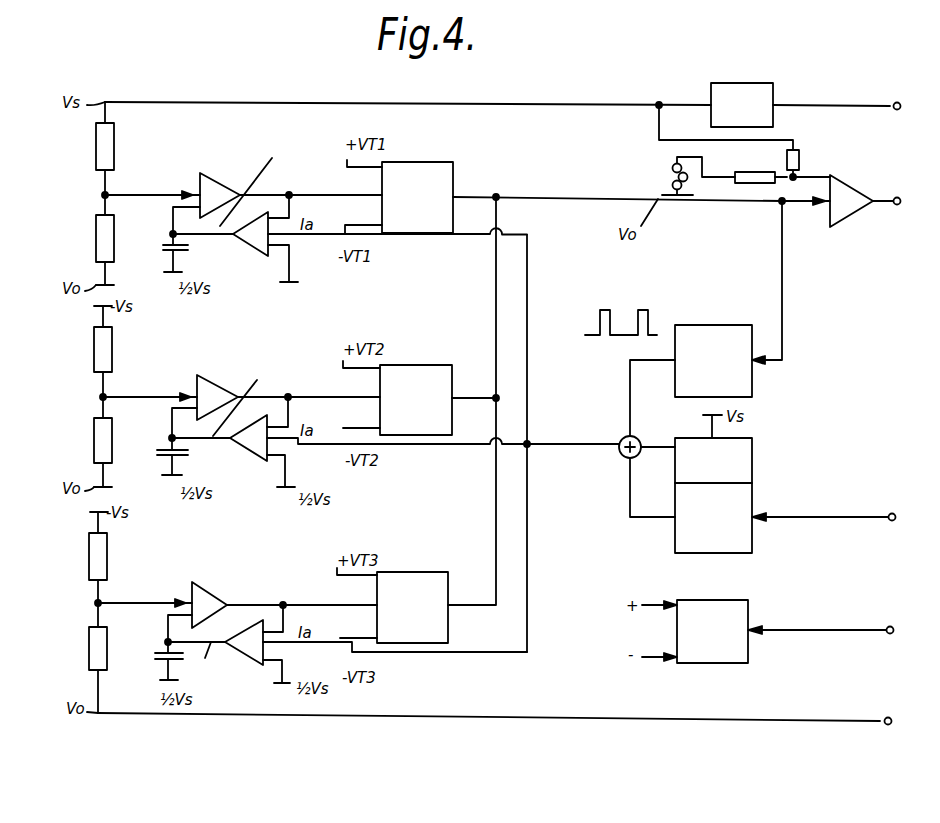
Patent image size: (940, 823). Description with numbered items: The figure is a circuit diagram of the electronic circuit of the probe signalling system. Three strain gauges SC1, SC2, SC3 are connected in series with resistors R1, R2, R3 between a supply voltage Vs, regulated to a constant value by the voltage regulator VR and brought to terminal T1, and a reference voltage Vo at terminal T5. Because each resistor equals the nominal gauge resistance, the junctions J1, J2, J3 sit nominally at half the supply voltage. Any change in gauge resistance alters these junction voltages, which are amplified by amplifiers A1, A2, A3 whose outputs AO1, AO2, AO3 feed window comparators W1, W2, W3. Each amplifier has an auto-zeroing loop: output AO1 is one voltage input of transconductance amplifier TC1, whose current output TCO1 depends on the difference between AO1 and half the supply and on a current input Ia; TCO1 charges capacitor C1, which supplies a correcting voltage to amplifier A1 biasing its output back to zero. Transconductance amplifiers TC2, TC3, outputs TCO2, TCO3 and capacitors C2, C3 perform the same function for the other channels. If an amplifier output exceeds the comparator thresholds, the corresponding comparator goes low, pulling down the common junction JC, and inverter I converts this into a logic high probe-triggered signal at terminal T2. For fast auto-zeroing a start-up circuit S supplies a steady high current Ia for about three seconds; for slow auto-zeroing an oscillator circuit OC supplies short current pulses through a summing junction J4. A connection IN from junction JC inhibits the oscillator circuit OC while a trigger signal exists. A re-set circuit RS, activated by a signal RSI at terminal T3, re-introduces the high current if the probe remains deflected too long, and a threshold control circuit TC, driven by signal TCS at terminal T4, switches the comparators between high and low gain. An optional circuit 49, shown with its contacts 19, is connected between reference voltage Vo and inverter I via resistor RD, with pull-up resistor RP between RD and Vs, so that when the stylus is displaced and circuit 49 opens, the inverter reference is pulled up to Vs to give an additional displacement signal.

The resistor R1 is at (115, 150).
The resistor R2 is at (94, 348).
The resistor R3 is at (89, 555).
The strain gauge SC1 is at (96, 240).
The strain gauge SC2 is at (94, 444).
The strain gauge SC3 is at (89, 658).
The junction J1 is at (106, 194).
The junction J2 is at (105, 396).
The junction J3 is at (100, 602).
The summing junction J4 is at (624, 437).
The junction JC is at (498, 195).
The amplifier A1 is at (219, 190).
The amplifier A2 is at (210, 387).
The amplifier A3 is at (208, 592).
The output AO1 is at (310, 189).
The output AO2 is at (307, 392).
The output AO3 is at (295, 596).
The transconductance amplifier TC1 is at (257, 251).
The transconductance amplifier TC2 is at (257, 456).
The transconductance amplifier TC3 is at (256, 660).
The output TCO1 is at (257, 181).
The output TCO2 is at (251, 403).
The output TCO3 is at (213, 664).
The capacitor C1 is at (189, 251).
The capacitor C2 is at (184, 455).
The capacitor C3 is at (155, 657).
The window comparator W1 is at (399, 197).
The window comparator W2 is at (397, 398).
The window comparator W3 is at (392, 605).
The voltage regulator VR is at (742, 105).
The pull-up resistor RP is at (801, 160).
The resistor RD is at (770, 168).
The optional circuit 49 is at (676, 157).
The contacts 19 is at (672, 181).
The inverter I is at (861, 201).
The connection IN is at (779, 282).
The oscillator circuit OC is at (713, 361).
The start-up circuit S is at (713, 449).
The re-set circuit RS is at (713, 518).
The re-set signal RSI is at (820, 507).
The threshold control circuit TC is at (695, 631).
The signal TCS is at (817, 621).
The terminal T1 is at (913, 99).
The terminal T2 is at (912, 202).
The terminal T3 is at (906, 519).
The terminal T4 is at (904, 632).
The terminal T5 is at (885, 715).